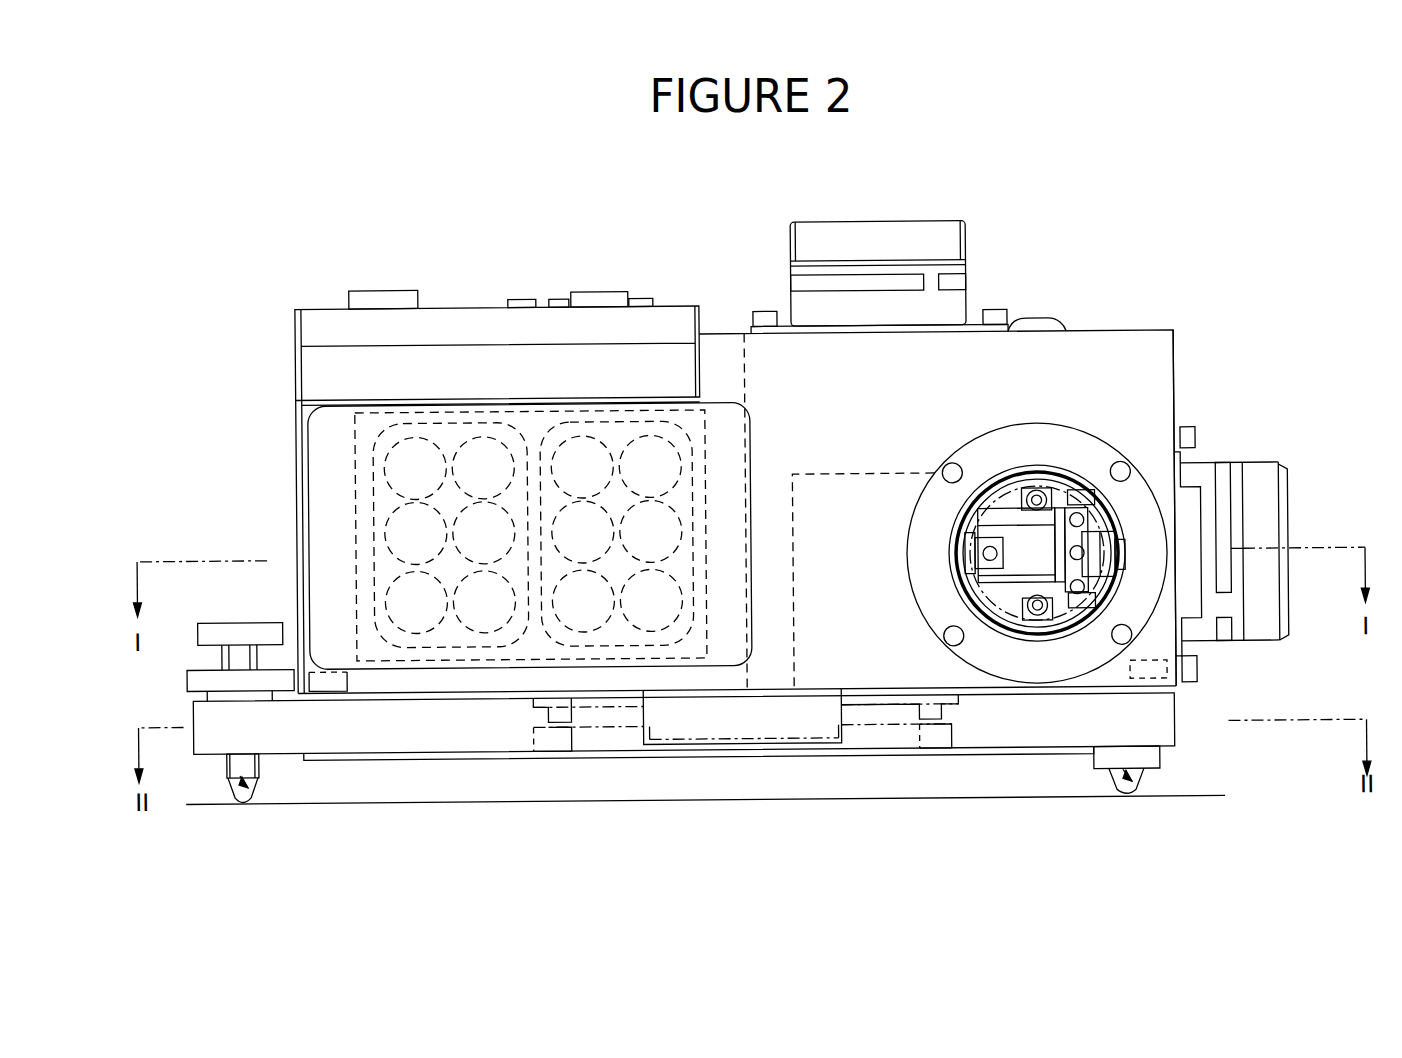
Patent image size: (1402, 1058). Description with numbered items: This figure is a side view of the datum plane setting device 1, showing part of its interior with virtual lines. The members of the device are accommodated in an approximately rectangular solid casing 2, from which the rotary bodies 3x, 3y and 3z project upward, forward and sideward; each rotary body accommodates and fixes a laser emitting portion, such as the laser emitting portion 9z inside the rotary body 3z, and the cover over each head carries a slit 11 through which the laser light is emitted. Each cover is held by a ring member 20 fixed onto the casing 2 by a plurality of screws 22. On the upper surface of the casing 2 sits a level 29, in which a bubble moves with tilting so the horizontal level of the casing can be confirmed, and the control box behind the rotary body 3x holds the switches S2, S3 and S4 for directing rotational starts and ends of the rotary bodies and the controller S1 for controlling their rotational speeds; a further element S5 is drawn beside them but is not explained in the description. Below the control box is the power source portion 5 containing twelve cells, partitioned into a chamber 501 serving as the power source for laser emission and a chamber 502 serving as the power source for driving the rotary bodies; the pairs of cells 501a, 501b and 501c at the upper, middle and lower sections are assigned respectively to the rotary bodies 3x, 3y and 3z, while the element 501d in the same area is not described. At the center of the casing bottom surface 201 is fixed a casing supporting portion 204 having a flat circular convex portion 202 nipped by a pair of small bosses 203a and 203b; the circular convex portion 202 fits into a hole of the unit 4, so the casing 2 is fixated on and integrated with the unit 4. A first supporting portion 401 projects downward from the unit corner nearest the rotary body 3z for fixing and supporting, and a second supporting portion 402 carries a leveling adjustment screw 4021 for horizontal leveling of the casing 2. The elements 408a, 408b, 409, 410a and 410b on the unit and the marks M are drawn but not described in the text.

The datum plane setting device 1 is at (1126, 357).
The casing 2 is at (1177, 392).
The rotary body 3x is at (888, 232).
The rotary body 3y is at (1263, 510).
The rotary body 3z is at (1022, 478).
The unit 4 is at (1160, 721).
The power source portion 5 is at (338, 438).
The laser emitting portion 9z is at (1012, 572).
The slit 11 is at (844, 283).
The ring member 20 is at (975, 327).
The screws 22 is at (760, 312).
The level 29 is at (1038, 326).
The casing bottom surface 201 is at (1005, 692).
The circular convex portion 202 is at (772, 712).
The small boss 203a is at (930, 717).
The small boss 203b is at (558, 757).
The casing supporting portion 204 is at (710, 703).
The first supporting portion 401 is at (1128, 787).
The second supporting portion 402 is at (250, 768).
The leg 408a is at (1142, 762).
The leg 408b is at (226, 740).
The axis line 409 is at (822, 742).
The spacer 410a is at (470, 700).
The spacer 410b is at (418, 757).
The leveling adjustment screw 4021 is at (198, 681).
The chamber 501 is at (320, 477).
The cells 501a is at (487, 452).
The cells 501b is at (485, 525).
The cells 501c is at (488, 603).
The tray holes 501d is at (651, 603).
The chamber 502 is at (618, 418).
The controller S1 is at (381, 289).
The switch S2 is at (522, 298).
The switch S3 is at (562, 298).
The switch S4 is at (641, 298).
The sensor S5 is at (617, 291).
The mark M is at (1152, 673).